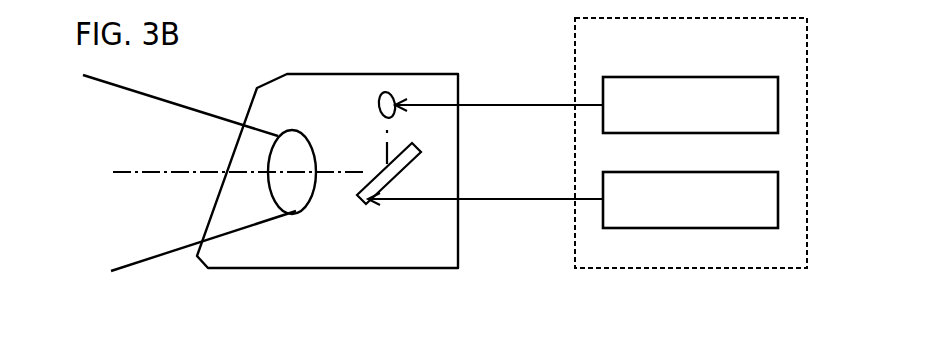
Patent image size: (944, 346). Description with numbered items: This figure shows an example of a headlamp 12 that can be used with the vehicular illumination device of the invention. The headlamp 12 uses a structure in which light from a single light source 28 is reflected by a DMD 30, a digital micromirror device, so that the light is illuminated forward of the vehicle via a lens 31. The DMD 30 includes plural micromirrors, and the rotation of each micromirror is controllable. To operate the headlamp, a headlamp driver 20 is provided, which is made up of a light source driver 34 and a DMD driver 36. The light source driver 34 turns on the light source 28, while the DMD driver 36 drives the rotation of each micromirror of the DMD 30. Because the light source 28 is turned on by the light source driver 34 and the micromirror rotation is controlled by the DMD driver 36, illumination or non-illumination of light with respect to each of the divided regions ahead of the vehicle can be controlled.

The headlamp 12 is at (445, 74).
The headlamp driver 20 is at (807, 137).
The light source 28 is at (383, 92).
The DMD (digital micromirror device) 30 is at (415, 153).
The lens 31 is at (306, 214).
The light source driver 34 is at (693, 77).
The DMD driver 36 is at (693, 172).